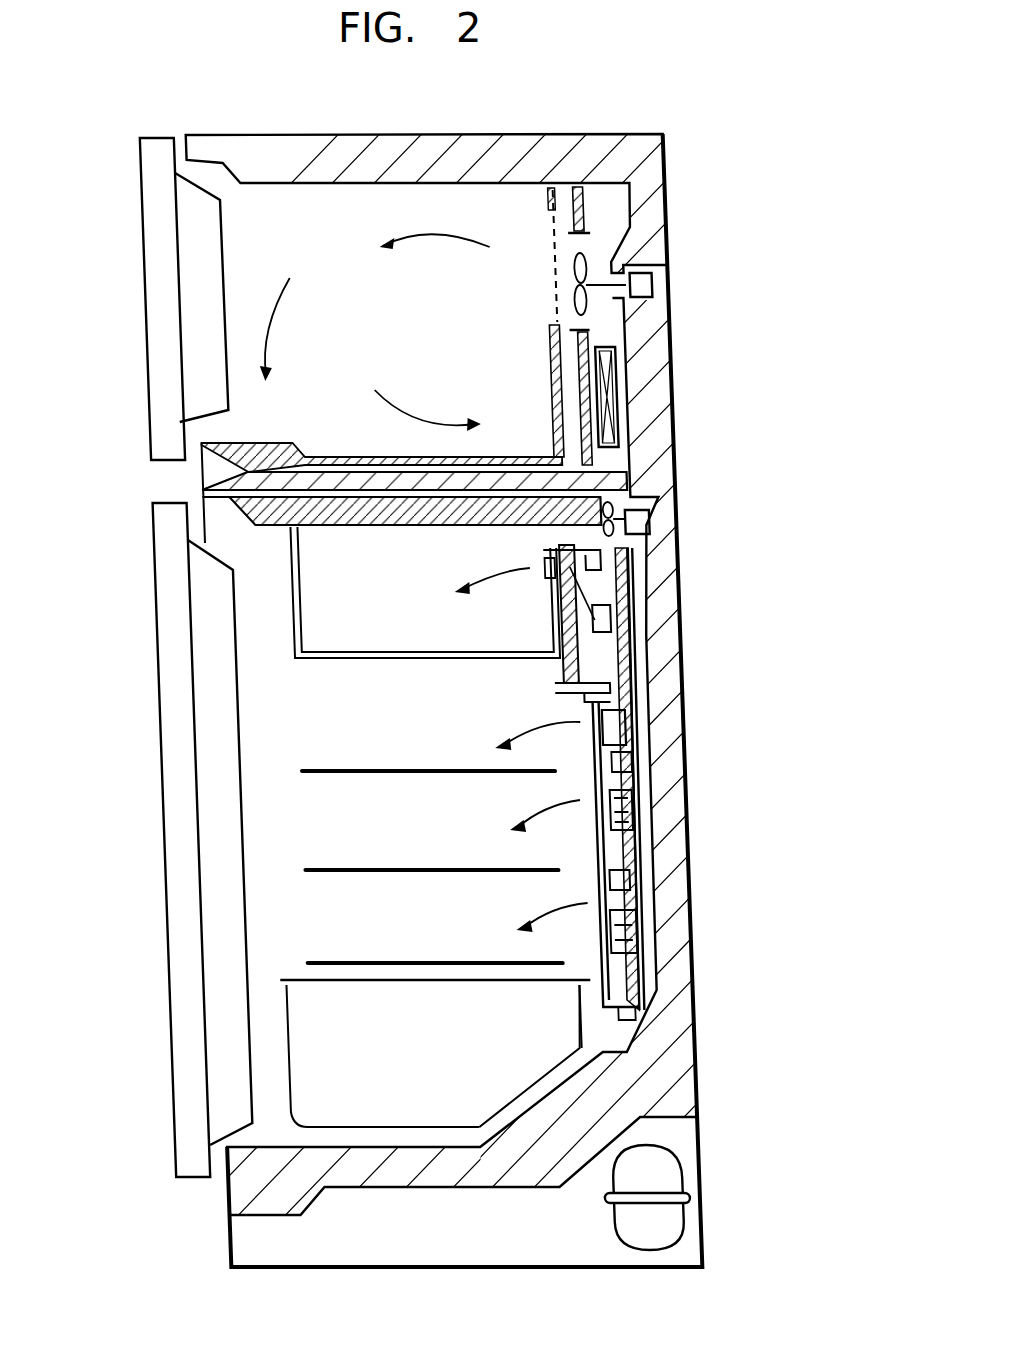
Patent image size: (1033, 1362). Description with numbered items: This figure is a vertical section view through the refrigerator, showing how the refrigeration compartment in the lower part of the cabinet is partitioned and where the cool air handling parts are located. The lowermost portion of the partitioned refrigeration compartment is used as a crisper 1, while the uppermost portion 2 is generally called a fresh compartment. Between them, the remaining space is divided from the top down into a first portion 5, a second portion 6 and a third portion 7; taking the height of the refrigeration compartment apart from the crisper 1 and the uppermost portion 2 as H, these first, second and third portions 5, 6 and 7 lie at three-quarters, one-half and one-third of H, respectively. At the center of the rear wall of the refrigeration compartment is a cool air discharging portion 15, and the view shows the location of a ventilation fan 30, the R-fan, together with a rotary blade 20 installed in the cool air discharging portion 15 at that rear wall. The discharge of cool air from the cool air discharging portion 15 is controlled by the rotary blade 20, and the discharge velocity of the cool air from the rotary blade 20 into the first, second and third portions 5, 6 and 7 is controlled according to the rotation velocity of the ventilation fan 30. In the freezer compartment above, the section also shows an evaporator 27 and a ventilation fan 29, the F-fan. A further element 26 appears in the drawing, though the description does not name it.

The crisper 1 is at (265, 1072).
The uppermost portion 2 is at (294, 600).
The first portion 5 is at (275, 722).
The second portion 6 is at (266, 833).
The third portion 7 is at (254, 933).
The cool air discharging portion 15 is at (622, 795).
The rotary blade 20 is at (595, 708).
The compressor 26 is at (639, 1165).
The evaporator 27 is at (596, 400).
The ventilation fan (F-fan) 29 is at (630, 285).
The ventilation fan (R-fan) 30 is at (633, 512).